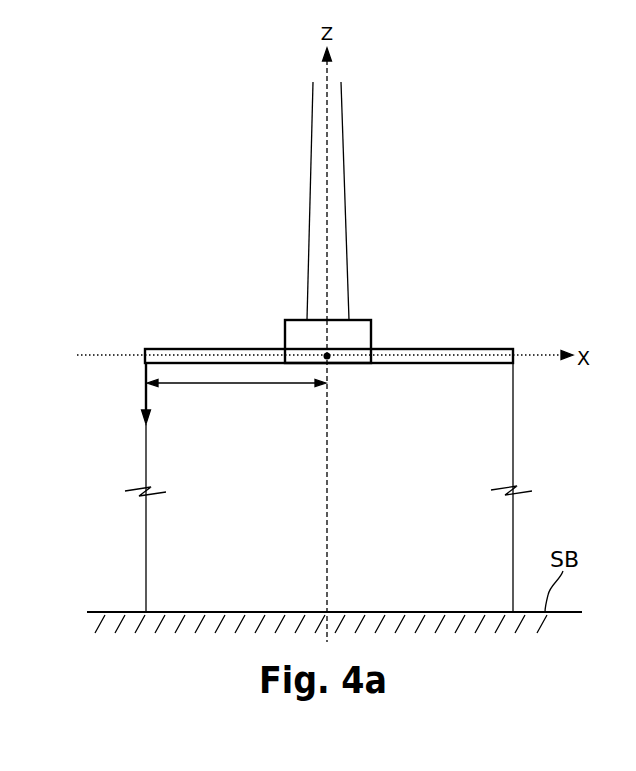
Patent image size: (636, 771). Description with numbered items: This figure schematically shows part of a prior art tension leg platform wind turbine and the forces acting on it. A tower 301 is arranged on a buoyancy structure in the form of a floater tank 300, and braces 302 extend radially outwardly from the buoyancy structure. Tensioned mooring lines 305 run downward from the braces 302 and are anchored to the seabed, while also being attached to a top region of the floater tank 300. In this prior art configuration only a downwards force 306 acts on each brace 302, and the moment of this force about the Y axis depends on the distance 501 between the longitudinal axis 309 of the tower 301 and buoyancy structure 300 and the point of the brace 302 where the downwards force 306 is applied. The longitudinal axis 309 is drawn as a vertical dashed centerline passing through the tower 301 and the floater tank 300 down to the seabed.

The floater tank 300 is at (362, 335).
The tower 301 is at (338, 273).
The brace 302 is at (212, 349).
The tensioned mooring line 305 is at (146, 531).
The downwards force 306 is at (146, 402).
The longitudinal axis 309 is at (327, 541).
The distance 501 is at (242, 385).